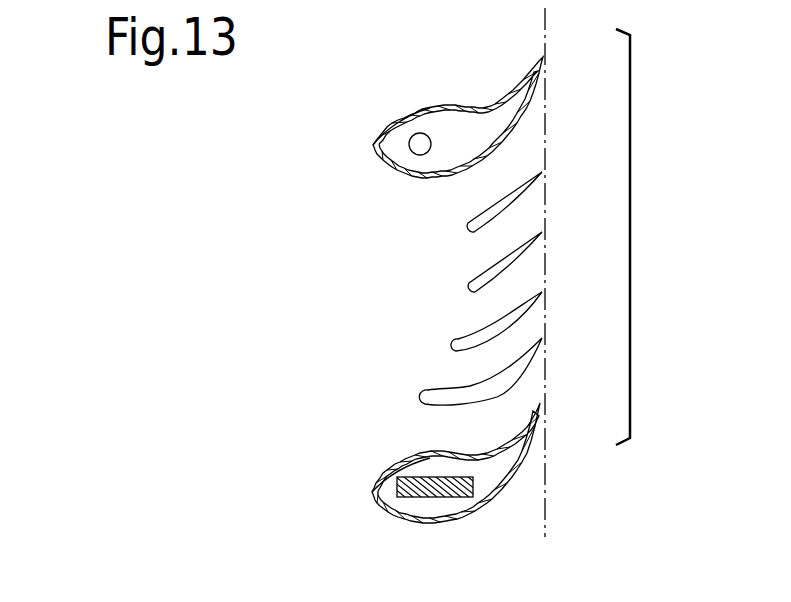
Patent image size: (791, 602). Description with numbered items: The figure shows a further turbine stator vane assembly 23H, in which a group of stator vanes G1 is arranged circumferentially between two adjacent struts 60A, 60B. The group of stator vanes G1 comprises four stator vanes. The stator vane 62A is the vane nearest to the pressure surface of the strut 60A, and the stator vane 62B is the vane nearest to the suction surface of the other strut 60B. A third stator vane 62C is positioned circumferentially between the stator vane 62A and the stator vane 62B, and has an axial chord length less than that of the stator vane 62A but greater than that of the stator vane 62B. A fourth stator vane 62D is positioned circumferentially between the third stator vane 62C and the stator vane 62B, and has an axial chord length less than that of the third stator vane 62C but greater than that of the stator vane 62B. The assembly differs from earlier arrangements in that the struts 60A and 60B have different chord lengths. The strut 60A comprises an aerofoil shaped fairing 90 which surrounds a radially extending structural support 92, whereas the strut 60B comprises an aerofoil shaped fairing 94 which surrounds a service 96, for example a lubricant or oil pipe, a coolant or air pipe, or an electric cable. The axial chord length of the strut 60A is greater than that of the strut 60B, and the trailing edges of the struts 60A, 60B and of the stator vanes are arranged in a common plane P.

The strut 60A is at (437, 521).
The strut 60B is at (469, 104).
The stator vane 62A is at (432, 388).
The stator vane 62B is at (466, 226).
The third stator vane 62C is at (455, 340).
The fourth stator vane 62D is at (470, 288).
The aerofoil shaped fairing 90 is at (373, 492).
The radially extending structural support 92 is at (408, 478).
The aerofoil shaped fairing 94 is at (372, 145).
The service 96 is at (413, 136).
The group of stator vanes G1 is at (647, 237).
The common plane P is at (545, 512).
The turbine stator vane assembly 23H is at (692, 163).